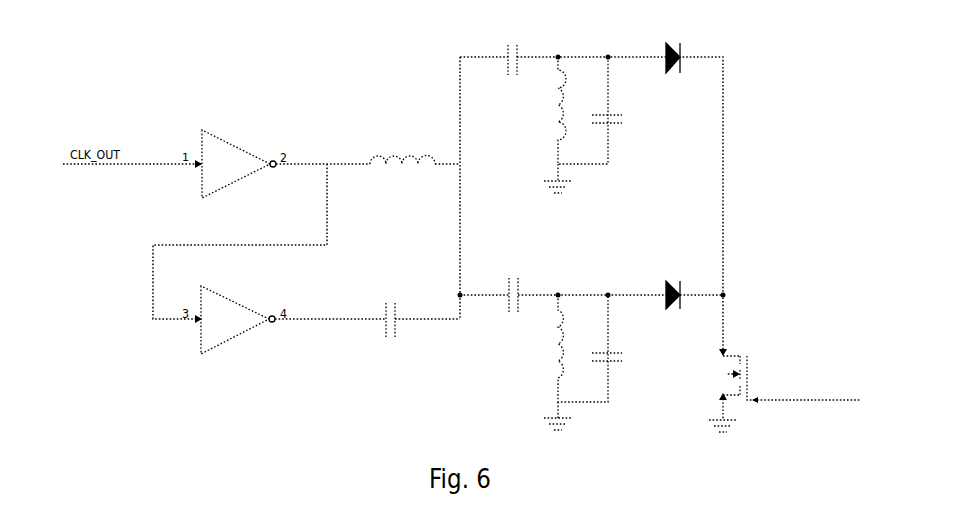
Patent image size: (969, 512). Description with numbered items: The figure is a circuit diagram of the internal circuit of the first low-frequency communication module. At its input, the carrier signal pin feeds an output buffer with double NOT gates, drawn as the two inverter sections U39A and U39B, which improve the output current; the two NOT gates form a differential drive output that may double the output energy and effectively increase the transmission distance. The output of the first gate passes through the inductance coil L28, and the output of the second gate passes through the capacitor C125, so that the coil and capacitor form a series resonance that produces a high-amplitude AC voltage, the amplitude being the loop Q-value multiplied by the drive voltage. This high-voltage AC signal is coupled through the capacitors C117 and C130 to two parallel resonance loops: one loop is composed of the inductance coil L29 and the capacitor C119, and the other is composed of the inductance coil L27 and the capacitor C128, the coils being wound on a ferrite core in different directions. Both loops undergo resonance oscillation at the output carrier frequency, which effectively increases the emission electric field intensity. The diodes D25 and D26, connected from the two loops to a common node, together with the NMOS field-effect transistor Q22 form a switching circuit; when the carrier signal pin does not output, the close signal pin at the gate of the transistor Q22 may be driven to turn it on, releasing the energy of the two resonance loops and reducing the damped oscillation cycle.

The inverter 74HC2G04 gate A U39A is at (239, 164).
The inverter 74HC2G04 gate B U39B is at (238, 318).
The inductor 330uH L28 is at (404, 152).
The capacitor C125 is at (397, 322).
The capacitor C117 is at (513, 51).
The capacitor C130 is at (513, 288).
The inductance coil L29 is at (567, 125).
The inductance coil L27 is at (565, 362).
The capacitor C119 is at (626, 129).
The capacitor 1.5nF C128 is at (627, 355).
The diode D25 is at (669, 59).
The diode D26 is at (669, 296).
The NMOS field-effect transistor Q22 is at (784, 390).